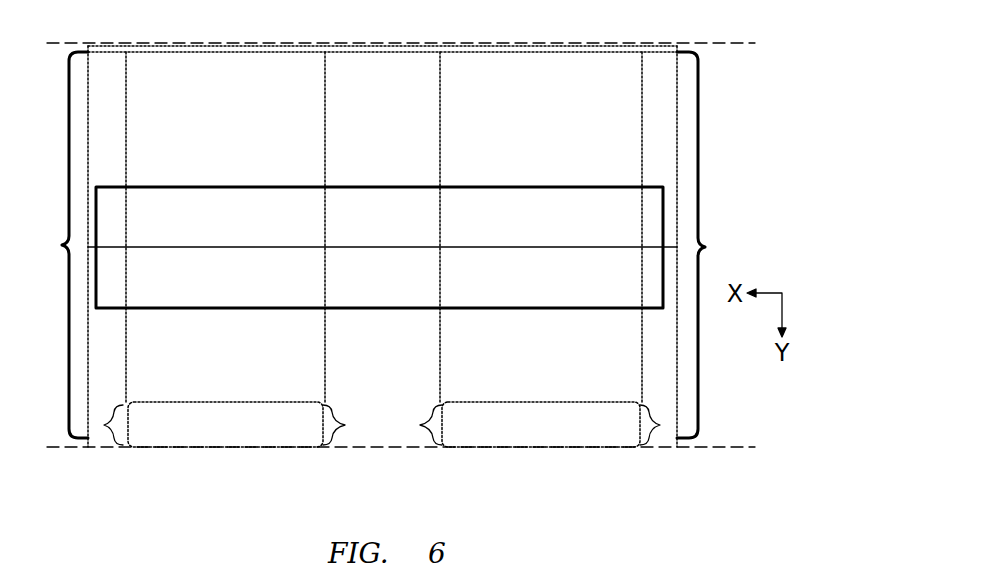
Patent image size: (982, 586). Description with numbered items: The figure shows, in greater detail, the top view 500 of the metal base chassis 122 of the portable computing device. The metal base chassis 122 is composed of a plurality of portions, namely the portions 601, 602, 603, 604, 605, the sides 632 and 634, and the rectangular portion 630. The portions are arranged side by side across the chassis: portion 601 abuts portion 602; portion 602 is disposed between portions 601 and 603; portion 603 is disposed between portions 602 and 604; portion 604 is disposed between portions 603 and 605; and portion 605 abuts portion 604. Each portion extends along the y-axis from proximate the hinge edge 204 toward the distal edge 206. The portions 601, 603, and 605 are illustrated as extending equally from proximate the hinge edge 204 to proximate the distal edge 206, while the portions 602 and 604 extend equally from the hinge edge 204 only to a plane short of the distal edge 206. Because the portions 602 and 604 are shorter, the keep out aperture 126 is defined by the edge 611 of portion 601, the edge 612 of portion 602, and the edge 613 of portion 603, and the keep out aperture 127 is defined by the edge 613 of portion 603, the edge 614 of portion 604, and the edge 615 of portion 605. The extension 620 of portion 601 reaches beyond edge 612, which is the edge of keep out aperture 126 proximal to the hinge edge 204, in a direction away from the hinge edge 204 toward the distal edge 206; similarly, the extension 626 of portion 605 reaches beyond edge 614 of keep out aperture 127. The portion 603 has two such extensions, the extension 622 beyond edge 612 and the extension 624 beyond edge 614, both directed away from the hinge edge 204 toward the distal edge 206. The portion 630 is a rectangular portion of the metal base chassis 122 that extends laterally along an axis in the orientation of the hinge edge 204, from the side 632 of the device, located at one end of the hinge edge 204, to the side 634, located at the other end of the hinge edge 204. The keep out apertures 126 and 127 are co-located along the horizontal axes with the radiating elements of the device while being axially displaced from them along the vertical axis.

The hinge edge 204 is at (705, 43).
The distal edge 206 is at (710, 447).
The metal base chassis 122 is at (680, 112).
The top view 500 is at (706, 186).
The portion 601 is at (90, 139).
The portion 602 is at (207, 139).
The portion 603 is at (364, 139).
The portion 604 is at (521, 139).
The portion 605 is at (644, 139).
The portion 630 is at (364, 297).
The side 632 is at (51, 245).
The side 634 is at (714, 245).
The extension 620 is at (105, 422).
The extension 622 is at (344, 422).
The extension 624 is at (421, 422).
The extension 626 is at (658, 422).
The edge 611 is at (131, 440).
The edge 612 is at (203, 404).
The edge 613 is at (322, 420).
The edge 614 is at (517, 404).
The edge 615 is at (637, 420).
The keep out aperture 126 is at (199, 427).
The keep out aperture 127 is at (490, 427).